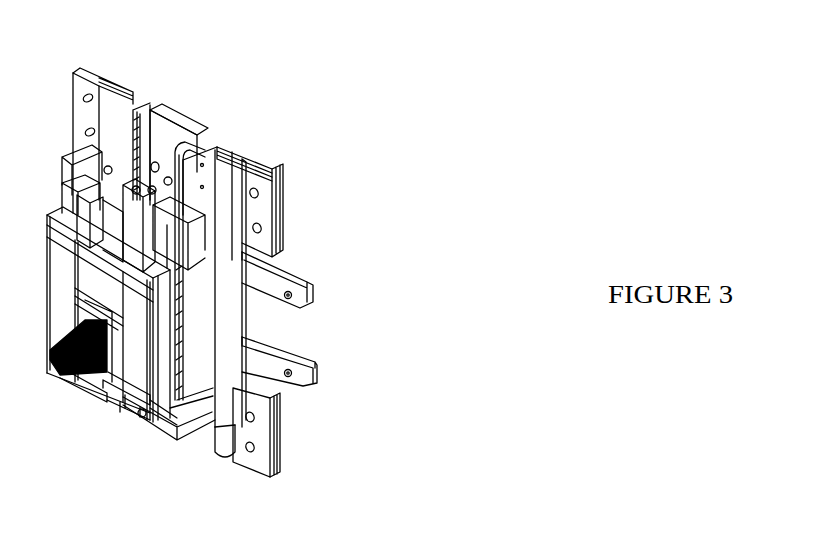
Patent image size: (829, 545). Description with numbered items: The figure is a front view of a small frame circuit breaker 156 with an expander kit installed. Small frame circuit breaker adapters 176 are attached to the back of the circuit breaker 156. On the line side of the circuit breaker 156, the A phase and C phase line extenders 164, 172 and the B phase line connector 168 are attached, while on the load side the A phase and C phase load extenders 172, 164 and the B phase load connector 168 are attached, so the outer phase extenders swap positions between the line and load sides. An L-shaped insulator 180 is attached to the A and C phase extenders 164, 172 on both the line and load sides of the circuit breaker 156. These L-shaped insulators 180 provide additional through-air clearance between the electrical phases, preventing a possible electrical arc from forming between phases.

The small frame circuit breaker 156 is at (131, 376).
The A phase line extender 164 is at (99, 70).
The B phase line connector 168 is at (173, 117).
The C phase line extender 172 is at (262, 163).
The small frame circuit breaker adapter 176 is at (310, 377).
The L-shaped insulator 180 is at (141, 104).